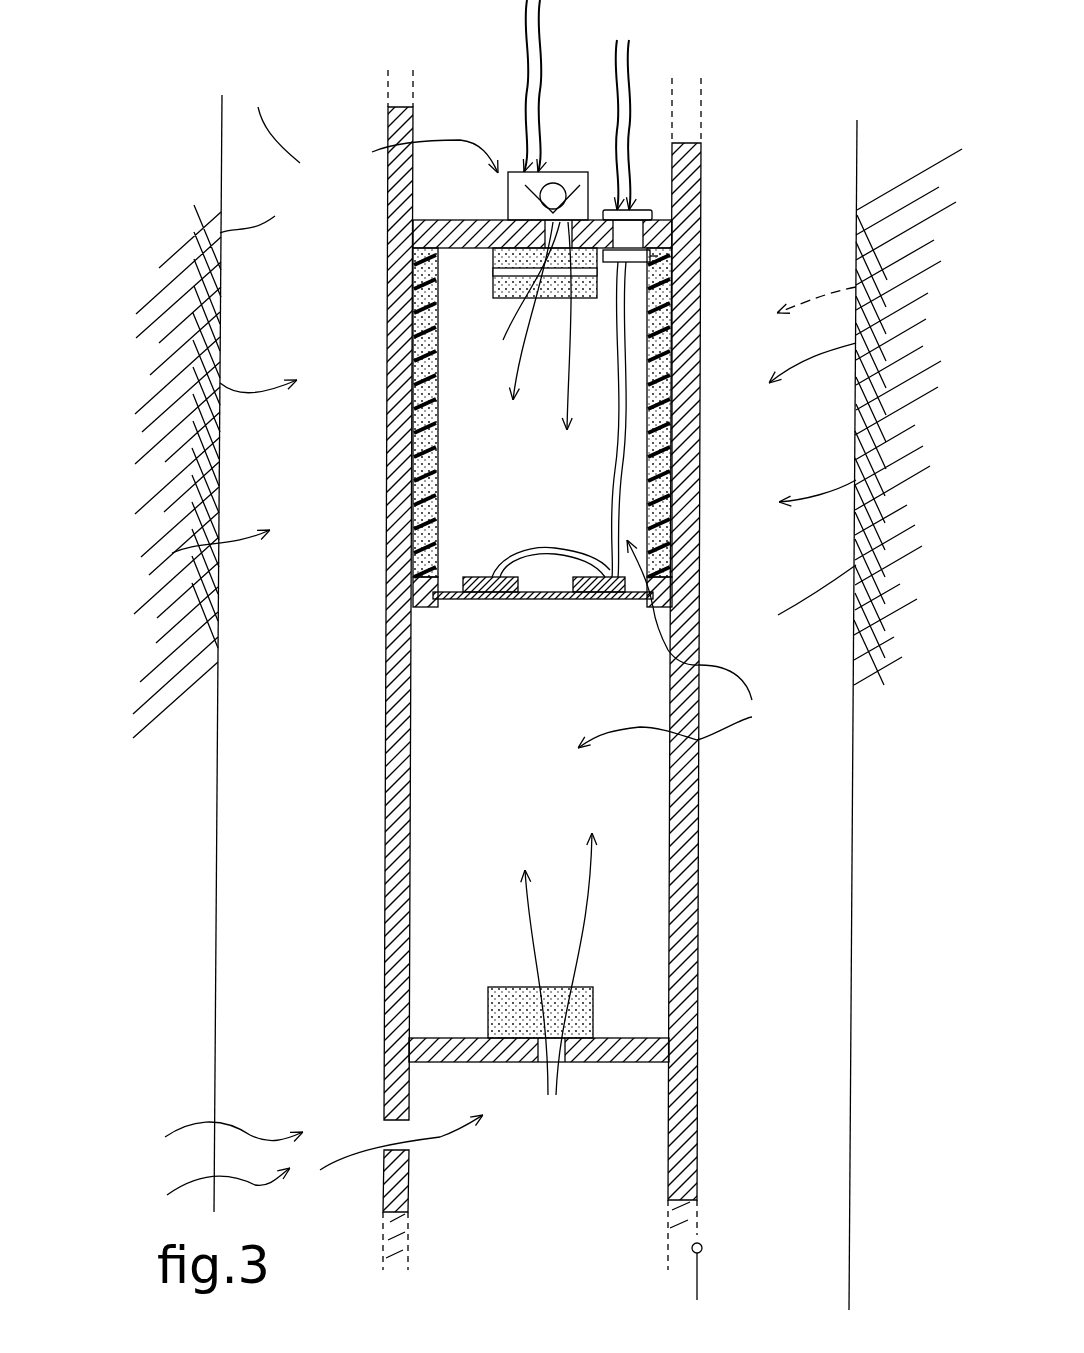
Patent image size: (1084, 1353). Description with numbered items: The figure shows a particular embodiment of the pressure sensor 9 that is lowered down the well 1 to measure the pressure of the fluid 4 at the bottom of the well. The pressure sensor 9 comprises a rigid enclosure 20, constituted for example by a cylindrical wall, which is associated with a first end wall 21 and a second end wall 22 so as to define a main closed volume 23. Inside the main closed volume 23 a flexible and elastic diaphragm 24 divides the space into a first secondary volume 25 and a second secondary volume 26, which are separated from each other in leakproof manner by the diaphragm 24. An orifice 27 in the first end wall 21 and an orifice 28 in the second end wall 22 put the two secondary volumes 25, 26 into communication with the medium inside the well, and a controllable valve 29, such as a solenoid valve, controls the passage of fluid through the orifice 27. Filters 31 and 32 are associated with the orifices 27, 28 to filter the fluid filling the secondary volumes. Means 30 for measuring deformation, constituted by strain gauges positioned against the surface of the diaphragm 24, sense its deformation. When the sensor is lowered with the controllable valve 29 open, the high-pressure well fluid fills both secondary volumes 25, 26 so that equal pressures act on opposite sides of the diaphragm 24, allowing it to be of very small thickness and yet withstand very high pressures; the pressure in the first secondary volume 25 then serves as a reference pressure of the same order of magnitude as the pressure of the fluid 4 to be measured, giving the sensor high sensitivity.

The well 1 is at (178, 484).
The fluid 4 is at (306, 167).
The pressure sensor 9 is at (700, 600).
The rigid enclosure 20 is at (386, 815).
The first end wall 21 is at (701, 228).
The second end wall 22 is at (697, 1062).
The main closed volume 23 is at (683, 644).
The diaphragm 24 is at (508, 599).
The first secondary volume 25 is at (480, 467).
The second secondary volume 26 is at (465, 714).
The orifice 27 is at (510, 318).
The orifice 28 is at (543, 1087).
The controllable valve 29 is at (517, 192).
The means for measuring deformation 30 is at (592, 558).
The filter 31 is at (493, 294).
The filter 32 is at (488, 990).